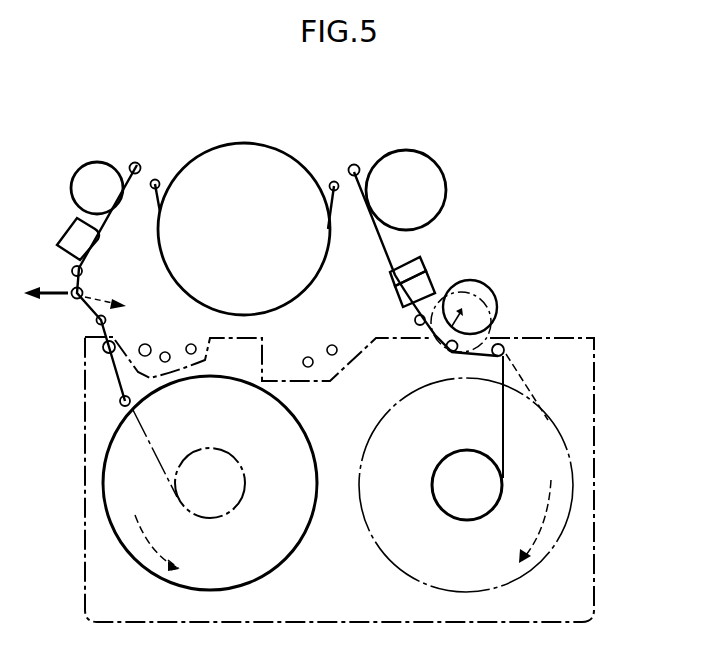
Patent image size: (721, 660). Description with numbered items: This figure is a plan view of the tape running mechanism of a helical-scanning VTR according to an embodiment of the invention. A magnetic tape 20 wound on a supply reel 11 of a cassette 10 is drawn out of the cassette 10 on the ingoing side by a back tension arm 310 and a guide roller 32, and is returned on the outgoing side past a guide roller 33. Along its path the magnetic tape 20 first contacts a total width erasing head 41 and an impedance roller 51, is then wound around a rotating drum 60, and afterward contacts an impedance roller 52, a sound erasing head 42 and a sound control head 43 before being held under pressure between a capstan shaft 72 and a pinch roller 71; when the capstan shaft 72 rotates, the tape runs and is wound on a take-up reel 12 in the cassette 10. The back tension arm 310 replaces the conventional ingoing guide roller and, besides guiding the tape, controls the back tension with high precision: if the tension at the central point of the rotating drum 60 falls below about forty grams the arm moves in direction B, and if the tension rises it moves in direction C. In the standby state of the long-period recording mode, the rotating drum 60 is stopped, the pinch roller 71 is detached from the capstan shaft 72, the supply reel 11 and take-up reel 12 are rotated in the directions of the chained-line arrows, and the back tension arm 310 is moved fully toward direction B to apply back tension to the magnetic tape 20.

The cassette 10 is at (590, 582).
The supply reel 11 is at (103, 498).
The take-up reel 12 is at (572, 470).
The magnetic tape 20 is at (90, 371).
The guide roller 32 is at (141, 163).
The guide roller 33 is at (355, 164).
The total width erasing head 41 is at (62, 225).
The sound erasing head 42 is at (423, 258).
The sound control head 43 is at (434, 283).
The impedance roller 51 is at (97, 161).
The impedance roller 52 is at (436, 163).
The rotating drum 60 is at (244, 142).
The pinch roller 71 is at (497, 300).
The capstan shaft 72 is at (447, 351).
The back tension arm 310 is at (84, 290).